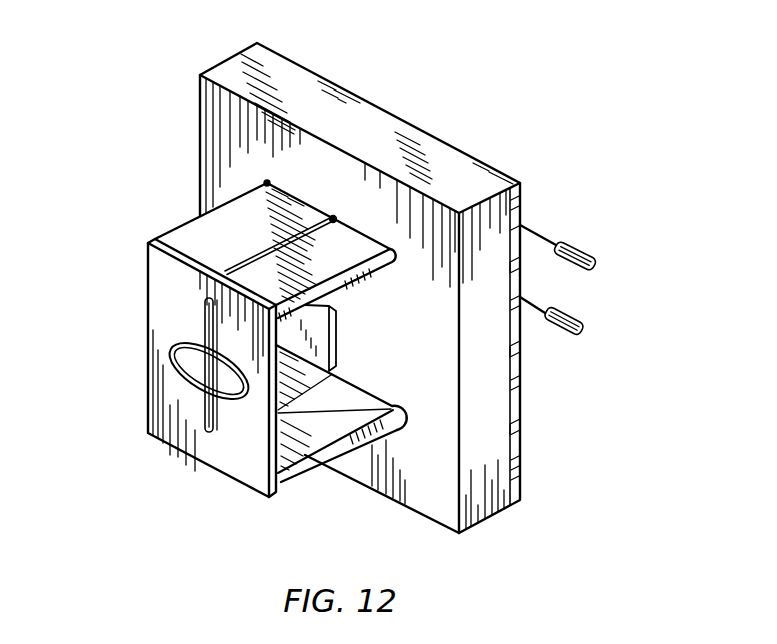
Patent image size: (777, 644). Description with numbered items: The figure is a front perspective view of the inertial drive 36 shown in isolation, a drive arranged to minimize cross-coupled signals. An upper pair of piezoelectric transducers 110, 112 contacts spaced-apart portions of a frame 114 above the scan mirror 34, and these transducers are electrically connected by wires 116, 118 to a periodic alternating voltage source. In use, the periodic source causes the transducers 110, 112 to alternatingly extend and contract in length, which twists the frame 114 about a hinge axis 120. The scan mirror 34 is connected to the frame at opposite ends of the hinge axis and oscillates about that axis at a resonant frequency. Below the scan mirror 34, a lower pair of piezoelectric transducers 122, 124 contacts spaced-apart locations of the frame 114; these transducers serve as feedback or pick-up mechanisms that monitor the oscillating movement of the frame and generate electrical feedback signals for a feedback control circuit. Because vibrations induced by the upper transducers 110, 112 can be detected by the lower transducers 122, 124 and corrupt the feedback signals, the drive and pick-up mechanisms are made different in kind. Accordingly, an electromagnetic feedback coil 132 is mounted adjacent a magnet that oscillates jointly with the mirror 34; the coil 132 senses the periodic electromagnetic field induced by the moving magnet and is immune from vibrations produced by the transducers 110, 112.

The inertial drive 36 is at (196, 44).
The piezoelectric transducer 110 is at (202, 228).
The piezoelectric transducer 112 is at (367, 255).
The frame 114 is at (157, 292).
The wire 116 is at (579, 251).
The wire 118 is at (563, 334).
The hinge axis 120 is at (192, 376).
The scan mirror 34 is at (203, 438).
The piezoelectric transducer 122 is at (274, 466).
The piezoelectric transducer 124 is at (315, 440).
The electromagnetic feedback coil 132 is at (335, 347).